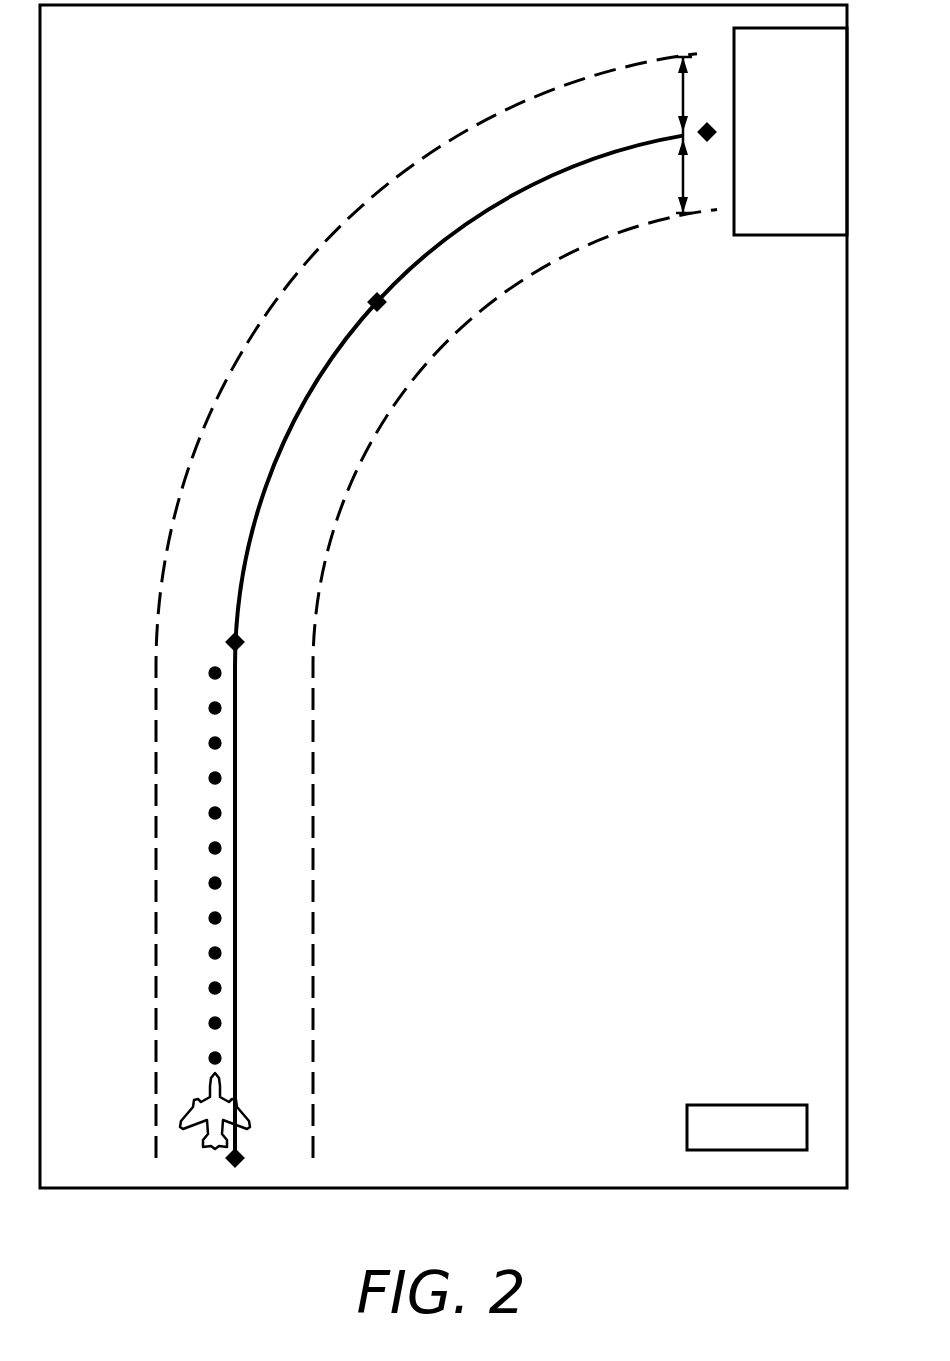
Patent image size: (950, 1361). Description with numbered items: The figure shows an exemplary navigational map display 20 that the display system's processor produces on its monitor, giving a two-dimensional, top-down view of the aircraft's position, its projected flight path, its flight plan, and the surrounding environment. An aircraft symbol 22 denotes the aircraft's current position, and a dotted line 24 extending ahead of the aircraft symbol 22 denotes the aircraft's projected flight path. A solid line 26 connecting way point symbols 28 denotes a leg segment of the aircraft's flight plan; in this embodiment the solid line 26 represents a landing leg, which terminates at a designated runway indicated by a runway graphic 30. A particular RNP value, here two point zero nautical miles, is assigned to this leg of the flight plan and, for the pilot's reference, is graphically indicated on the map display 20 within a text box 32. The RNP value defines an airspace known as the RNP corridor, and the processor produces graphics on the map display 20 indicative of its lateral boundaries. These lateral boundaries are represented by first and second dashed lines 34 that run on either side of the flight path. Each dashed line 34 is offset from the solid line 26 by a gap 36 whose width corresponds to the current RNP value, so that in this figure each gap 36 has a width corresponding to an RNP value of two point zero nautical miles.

The navigational map display 20 is at (113, 66).
The aircraft symbol 22 is at (210, 1150).
The dotted line 24 is at (212, 665).
The solid line 26 is at (248, 545).
The way point symbols 28 is at (243, 1158).
The runway graphic 30 is at (790, 236).
The text box 32 is at (748, 1103).
The dashed lines 34 is at (341, 222).
The gap 36 is at (683, 100).